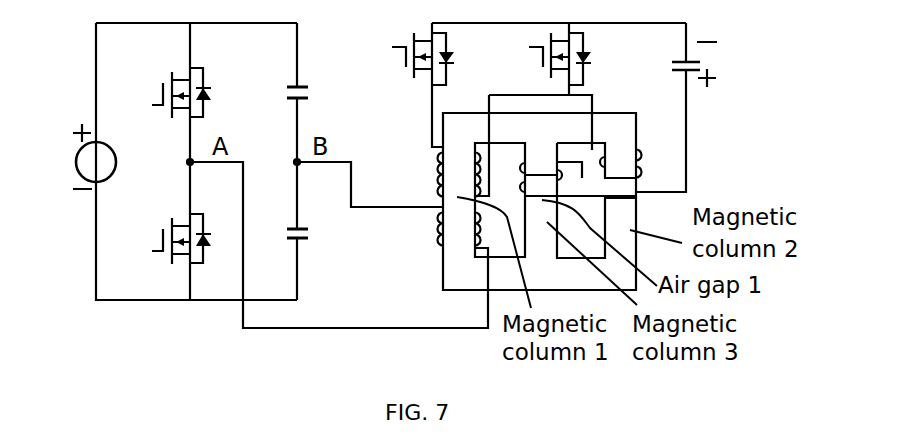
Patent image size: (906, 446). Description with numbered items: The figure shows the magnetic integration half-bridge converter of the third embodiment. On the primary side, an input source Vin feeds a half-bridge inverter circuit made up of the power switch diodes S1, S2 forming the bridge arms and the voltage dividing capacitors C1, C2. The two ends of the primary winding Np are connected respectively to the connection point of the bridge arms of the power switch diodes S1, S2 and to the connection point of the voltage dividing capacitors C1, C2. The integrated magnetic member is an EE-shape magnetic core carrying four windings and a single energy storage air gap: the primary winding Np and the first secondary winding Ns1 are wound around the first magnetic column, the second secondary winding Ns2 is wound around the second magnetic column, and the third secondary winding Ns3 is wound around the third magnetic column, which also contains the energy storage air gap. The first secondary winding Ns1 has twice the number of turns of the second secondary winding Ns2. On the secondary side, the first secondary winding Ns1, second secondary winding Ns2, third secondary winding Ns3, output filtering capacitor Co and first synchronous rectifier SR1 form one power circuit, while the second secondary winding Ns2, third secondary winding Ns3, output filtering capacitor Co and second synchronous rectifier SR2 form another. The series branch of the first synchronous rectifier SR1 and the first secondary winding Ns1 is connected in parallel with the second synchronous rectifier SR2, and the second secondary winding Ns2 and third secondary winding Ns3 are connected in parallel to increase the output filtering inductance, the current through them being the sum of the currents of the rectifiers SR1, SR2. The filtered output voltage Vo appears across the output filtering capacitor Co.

The input voltage source Vin is at (74, 156).
The power switch diode S1 is at (171, 93).
The power switch diode S2 is at (171, 239).
The voltage dividing capacitor C1 is at (280, 85).
The voltage dividing capacitor C2 is at (280, 230).
The first synchronous rectifier SR1 is at (408, 62).
The second synchronous rectifier SR2 is at (544, 62).
The output filtering capacitor Co is at (668, 107).
The output voltage Vo is at (723, 64).
The first secondary winding Ns1 is at (438, 173).
The second secondary winding Ns2 is at (658, 161).
The third secondary winding Ns3 is at (562, 152).
The primary winding Np is at (442, 231).